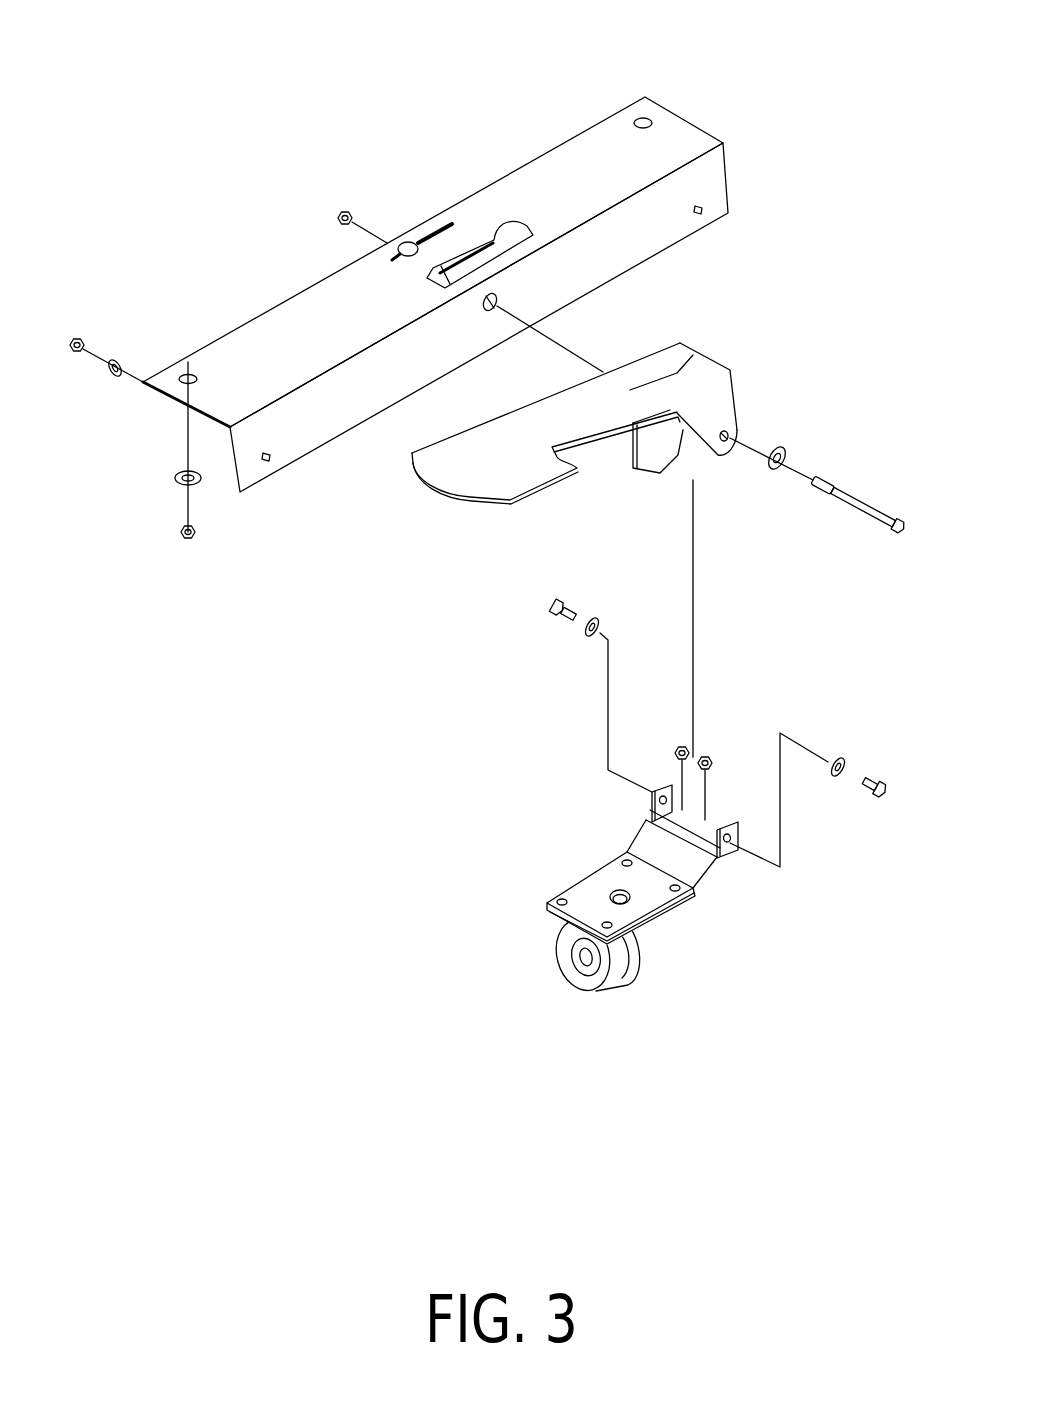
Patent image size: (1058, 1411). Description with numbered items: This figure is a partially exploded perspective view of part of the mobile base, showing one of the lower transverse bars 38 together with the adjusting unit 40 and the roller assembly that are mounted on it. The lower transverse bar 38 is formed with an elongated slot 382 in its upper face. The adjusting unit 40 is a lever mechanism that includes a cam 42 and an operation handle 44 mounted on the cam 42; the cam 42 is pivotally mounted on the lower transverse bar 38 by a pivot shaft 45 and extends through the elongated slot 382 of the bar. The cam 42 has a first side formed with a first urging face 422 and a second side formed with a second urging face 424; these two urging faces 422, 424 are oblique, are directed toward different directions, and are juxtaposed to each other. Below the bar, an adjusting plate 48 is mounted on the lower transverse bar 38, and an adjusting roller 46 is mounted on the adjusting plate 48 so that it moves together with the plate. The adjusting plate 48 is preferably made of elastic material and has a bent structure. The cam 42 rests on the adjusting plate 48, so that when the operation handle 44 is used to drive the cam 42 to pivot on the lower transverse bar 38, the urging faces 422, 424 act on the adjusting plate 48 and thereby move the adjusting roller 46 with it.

The lower transverse bar 38 is at (547, 173).
The elongated slot 382 is at (462, 268).
The adjusting unit 40 is at (857, 318).
The cam 42 is at (582, 476).
The first urging face 422 is at (690, 463).
The second urging face 424 is at (648, 443).
The operation handle 44 is at (690, 345).
The pivot shaft 45 is at (857, 515).
The adjusting roller 46 is at (627, 965).
The adjusting plate 48 is at (663, 913).